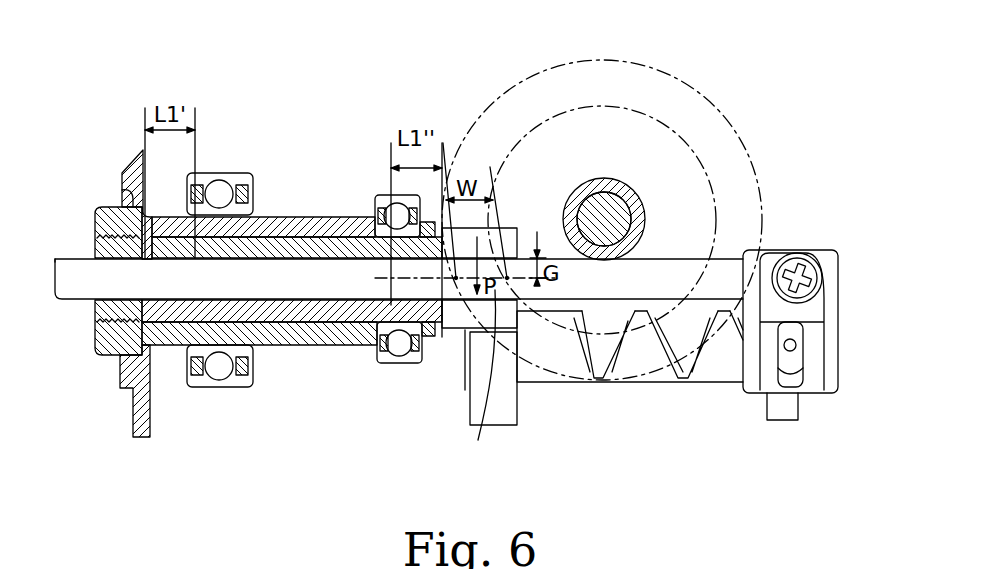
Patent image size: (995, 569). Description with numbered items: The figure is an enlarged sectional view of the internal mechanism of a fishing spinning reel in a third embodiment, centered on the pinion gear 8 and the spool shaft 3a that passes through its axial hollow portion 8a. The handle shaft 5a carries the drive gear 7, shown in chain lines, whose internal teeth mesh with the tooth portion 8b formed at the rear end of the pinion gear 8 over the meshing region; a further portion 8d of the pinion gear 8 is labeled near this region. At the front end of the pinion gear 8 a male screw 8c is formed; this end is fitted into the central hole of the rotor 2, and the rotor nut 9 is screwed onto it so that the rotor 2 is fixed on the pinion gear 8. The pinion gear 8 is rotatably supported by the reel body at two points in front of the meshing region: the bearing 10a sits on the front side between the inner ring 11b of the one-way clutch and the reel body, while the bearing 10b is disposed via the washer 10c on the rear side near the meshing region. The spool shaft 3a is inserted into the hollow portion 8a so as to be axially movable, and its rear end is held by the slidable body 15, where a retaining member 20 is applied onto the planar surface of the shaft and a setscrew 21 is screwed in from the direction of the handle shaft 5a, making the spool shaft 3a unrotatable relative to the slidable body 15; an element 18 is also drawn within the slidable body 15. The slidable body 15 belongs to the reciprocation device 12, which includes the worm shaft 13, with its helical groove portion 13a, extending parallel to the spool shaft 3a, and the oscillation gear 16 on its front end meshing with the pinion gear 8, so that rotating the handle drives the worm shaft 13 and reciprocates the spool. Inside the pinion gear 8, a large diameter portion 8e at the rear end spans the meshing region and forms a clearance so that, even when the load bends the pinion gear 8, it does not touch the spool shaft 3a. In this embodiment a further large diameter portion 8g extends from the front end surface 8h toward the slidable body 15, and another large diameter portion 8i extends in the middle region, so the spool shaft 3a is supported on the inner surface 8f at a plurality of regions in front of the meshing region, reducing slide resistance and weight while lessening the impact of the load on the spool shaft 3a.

The rotor 2 is at (126, 171).
The rotor nut 9 is at (100, 214).
The large diameter portion 8g is at (93, 258).
The front end surface 8h is at (97, 320).
The male screw 8c is at (106, 356).
The hollow portion 8a is at (152, 296).
The inner surface 8f is at (202, 378).
The large diameter portion 8i is at (272, 345).
The pinion gear 8 is at (305, 325).
The bearing 10a is at (248, 172).
The inner ring 11b is at (308, 214).
The bearing 10b is at (380, 194).
The washer 10c is at (433, 343).
The tooth portion 8b is at (495, 228).
The gear ring 8d is at (523, 233).
The handle shaft 5a is at (612, 206).
The spool shaft 3a is at (675, 256).
The drive gear 7 is at (757, 150).
The setscrew 21 is at (799, 257).
The slidable body 15 is at (836, 296).
The retaining member 20 is at (812, 313).
The pin slot 18 is at (808, 355).
The worm shaft 13 is at (722, 373).
The rack teeth 13a is at (665, 385).
The reciprocation device 12 is at (567, 398).
The oscillation gear 16 is at (505, 403).
The large diameter portion 8e is at (473, 381).